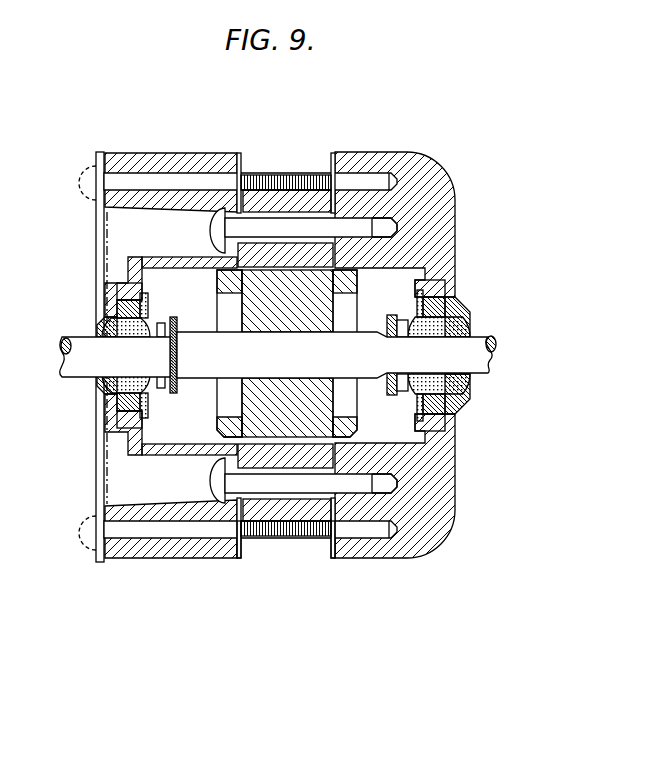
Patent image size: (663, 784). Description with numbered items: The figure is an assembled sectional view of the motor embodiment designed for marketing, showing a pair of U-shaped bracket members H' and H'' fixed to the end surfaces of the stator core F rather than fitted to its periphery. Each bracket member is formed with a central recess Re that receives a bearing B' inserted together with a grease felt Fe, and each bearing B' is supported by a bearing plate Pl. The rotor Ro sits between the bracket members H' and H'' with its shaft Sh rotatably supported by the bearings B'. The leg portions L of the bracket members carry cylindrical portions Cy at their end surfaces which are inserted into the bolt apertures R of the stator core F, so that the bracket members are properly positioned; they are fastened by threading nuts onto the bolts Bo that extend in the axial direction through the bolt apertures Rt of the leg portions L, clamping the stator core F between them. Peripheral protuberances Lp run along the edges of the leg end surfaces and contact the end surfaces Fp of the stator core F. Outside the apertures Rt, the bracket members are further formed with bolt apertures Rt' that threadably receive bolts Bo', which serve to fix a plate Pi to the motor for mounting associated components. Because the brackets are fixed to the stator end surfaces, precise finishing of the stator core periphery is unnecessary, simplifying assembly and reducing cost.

The bracket member H'' is at (395, 370).
The bracket member H' is at (171, 434).
The leg portion L is at (193, 152).
The mounting plate Pi is at (97, 252).
The bolt aperture Rt' is at (267, 368).
The bolt Bo is at (212, 388).
The bolt Bo' is at (58, 183).
The bolt aperture Rt is at (428, 342).
The peripheral protuberance Lp is at (239, 153).
The end surface Fp is at (237, 532).
The cylindrical portion Cy is at (250, 190).
The bolt aperture R is at (287, 213).
The stator core F is at (283, 530).
The rotor Ro is at (335, 311).
The grease felt Fe is at (130, 402).
The bearing B' is at (269, 358).
The central recess Re is at (97, 333).
The bearing plate Pl is at (150, 400).
The shaft Sh is at (470, 358).